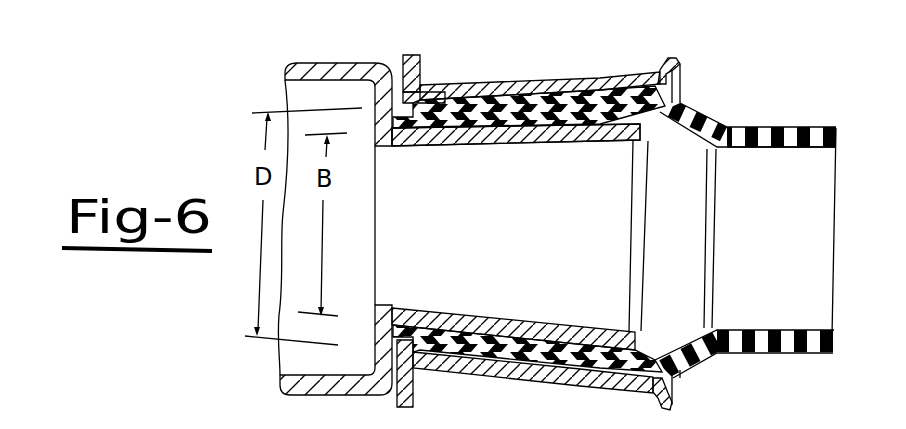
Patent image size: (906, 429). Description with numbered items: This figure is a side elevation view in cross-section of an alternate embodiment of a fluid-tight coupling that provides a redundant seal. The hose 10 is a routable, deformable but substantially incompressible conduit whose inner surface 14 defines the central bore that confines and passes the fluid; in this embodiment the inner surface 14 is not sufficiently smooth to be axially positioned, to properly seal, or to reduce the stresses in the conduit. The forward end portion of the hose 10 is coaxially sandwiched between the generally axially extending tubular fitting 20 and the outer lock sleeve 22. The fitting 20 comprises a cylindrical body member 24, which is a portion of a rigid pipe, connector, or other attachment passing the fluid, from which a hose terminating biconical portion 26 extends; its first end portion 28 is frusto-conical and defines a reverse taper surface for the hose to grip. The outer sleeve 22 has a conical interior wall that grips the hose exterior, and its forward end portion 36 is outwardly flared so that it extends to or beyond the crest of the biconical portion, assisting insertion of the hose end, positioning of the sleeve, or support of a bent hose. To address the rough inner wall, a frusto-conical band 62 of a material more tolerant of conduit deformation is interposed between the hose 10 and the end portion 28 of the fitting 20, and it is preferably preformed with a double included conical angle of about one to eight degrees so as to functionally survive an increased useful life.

The hose 10 is at (761, 133).
The inner surface 14 is at (808, 158).
The tubular fitting 20 is at (284, 59).
The outer lock sleeve 22 is at (537, 86).
The cylindrical body member 24 is at (340, 72).
The hose terminating biconical portion 26 is at (460, 152).
The first end portion 28 is at (556, 128).
The forward end portion 36 is at (681, 74).
The frusto-conical band 62 is at (494, 128).